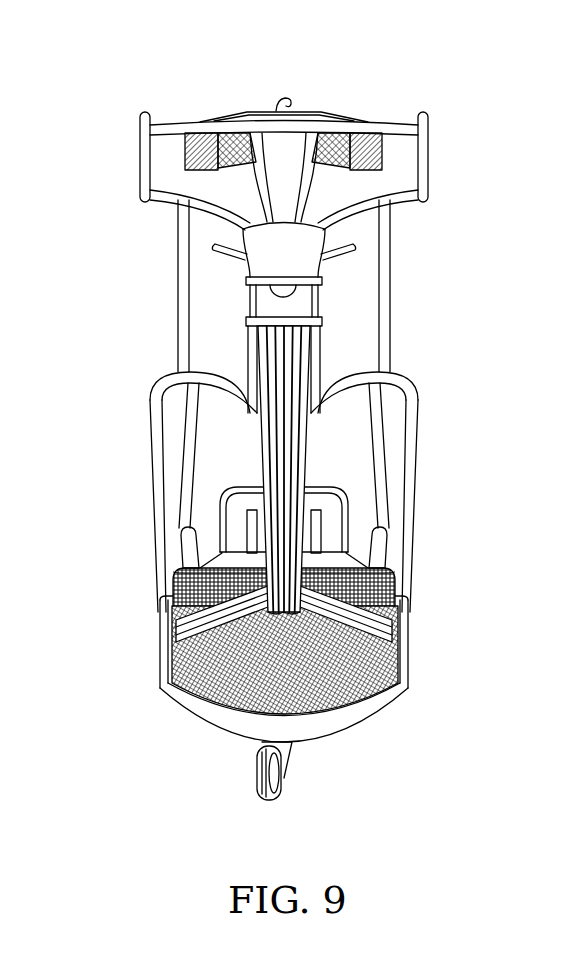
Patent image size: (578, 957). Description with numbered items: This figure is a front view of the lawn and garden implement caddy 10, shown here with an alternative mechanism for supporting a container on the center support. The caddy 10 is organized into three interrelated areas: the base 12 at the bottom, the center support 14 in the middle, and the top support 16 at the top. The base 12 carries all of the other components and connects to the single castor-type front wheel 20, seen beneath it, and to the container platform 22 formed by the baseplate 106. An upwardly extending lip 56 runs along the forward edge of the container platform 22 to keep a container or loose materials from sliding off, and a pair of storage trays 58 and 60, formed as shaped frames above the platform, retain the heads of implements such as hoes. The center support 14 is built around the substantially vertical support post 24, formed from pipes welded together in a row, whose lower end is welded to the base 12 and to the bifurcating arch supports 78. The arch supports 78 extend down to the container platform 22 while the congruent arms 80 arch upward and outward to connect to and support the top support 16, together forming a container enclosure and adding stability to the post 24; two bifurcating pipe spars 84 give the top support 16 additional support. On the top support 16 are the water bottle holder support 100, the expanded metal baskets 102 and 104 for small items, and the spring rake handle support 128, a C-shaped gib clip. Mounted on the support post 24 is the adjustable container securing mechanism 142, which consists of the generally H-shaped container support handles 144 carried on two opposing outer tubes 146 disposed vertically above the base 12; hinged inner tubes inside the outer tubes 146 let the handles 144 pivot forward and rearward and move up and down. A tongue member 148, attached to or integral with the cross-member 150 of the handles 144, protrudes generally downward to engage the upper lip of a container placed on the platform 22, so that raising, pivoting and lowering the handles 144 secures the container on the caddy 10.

The lawn and garden implement caddy 10 is at (289, 414).
The base 12 is at (289, 682).
The center support 14 is at (337, 406).
The top support 16 is at (286, 190).
The front wheel 20 is at (256, 777).
The container platform 22 is at (168, 693).
The support post 24 is at (277, 448).
The lip 56 is at (218, 722).
The storage tray 58 is at (395, 580).
The storage tray 60 is at (173, 605).
The arch supports 78 is at (415, 463).
The congruent arms 80 is at (423, 172).
The pipe spars 84 is at (387, 258).
The water bottle holder support 100 is at (195, 135).
The basket 102 is at (210, 168).
The basket 104 is at (347, 135).
The baseplate 106 is at (403, 670).
The spring rake handle support 128 is at (283, 96).
The adjustable container securing mechanism 142 is at (242, 265).
The container support handles 144 is at (318, 300).
The outer tubes 146 is at (318, 367).
The tongue member 148 is at (283, 294).
The cross-member 150 is at (246, 281).